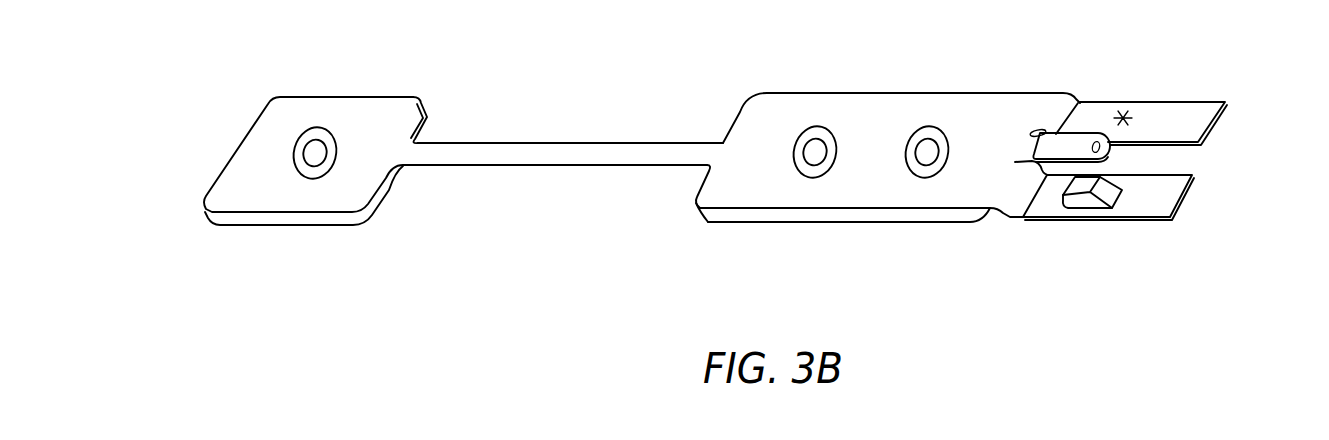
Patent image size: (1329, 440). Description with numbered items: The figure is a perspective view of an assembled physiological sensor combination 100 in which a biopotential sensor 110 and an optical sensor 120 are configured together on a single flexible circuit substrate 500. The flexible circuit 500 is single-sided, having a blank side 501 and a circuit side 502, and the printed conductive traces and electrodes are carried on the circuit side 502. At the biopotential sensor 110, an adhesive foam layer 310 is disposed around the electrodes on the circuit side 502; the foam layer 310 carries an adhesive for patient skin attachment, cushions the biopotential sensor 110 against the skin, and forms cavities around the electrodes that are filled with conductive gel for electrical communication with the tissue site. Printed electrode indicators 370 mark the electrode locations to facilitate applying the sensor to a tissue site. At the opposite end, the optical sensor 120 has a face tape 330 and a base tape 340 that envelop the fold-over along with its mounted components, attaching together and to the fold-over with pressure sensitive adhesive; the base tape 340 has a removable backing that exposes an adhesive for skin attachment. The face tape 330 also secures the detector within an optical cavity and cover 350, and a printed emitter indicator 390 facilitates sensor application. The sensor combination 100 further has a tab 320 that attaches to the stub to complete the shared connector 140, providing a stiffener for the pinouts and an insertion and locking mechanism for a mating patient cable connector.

The physiological sensor combination 100 is at (737, 34).
The biopotential sensor 110 is at (858, 271).
The optical sensor 120 is at (1100, 271).
The connector 140 is at (1033, 148).
The adhesive foam layer 310 is at (207, 220).
The tab 320 is at (1087, 145).
The face tape 330 is at (1210, 130).
The base tape 340 is at (1195, 178).
The optical cavity and cover 350 is at (1072, 203).
The printed electrode indicators 370 is at (313, 177).
The printed emitter indicator 390 is at (1123, 114).
The flexible circuit substrate 500 is at (777, 113).
The blank side 501 is at (530, 157).
The circuit side 502 is at (583, 177).